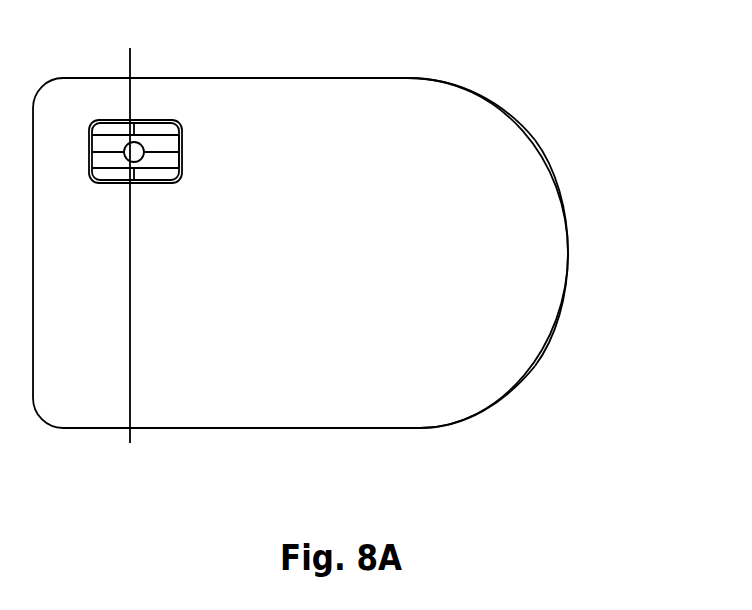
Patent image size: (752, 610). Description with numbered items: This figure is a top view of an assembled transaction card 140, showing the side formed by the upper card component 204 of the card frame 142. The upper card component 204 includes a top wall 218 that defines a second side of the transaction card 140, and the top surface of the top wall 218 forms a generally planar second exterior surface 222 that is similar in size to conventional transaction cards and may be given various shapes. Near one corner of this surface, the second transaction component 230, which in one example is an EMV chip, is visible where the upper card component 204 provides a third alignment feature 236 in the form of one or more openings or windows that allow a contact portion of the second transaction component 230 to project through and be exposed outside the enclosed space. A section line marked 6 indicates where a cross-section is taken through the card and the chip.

The transaction card 140 is at (568, 122).
The card frame 142 is at (567, 237).
The upper card component 204 is at (468, 92).
The top wall 218 is at (340, 108).
The second exterior surface 222 is at (500, 355).
The second transaction component 230 is at (112, 133).
The third alignment feature 236 is at (185, 137).
The section line 6- 6 is at (148, 443).